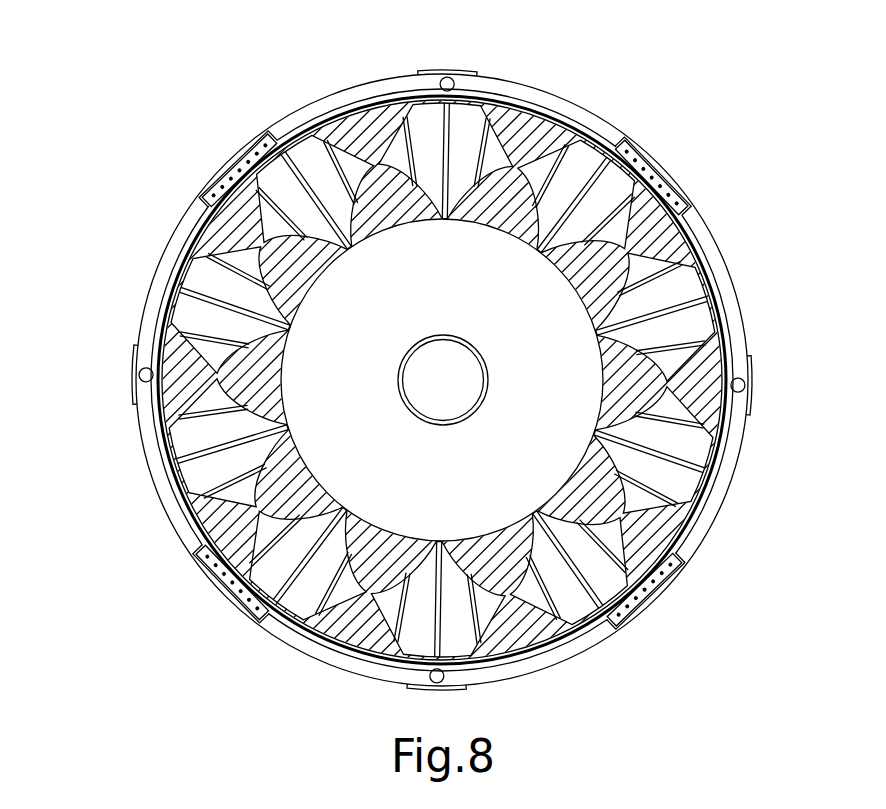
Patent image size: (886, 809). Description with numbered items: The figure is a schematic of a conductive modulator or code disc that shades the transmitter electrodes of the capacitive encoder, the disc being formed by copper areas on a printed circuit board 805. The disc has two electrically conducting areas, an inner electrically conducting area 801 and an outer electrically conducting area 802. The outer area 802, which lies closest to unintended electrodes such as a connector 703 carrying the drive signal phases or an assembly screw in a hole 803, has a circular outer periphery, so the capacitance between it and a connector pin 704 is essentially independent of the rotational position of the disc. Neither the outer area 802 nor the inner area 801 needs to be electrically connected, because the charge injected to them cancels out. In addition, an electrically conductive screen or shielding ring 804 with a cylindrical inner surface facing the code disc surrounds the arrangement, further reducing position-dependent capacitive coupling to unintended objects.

The connector 703 is at (207, 180).
The connector pin 704 is at (656, 166).
The inner electrically conducting area 801 is at (600, 275).
The outer electrically conducting area 802 is at (168, 347).
The hole 803 is at (442, 77).
The shielding ring 804 is at (160, 507).
The printed circuit board 805 is at (668, 298).